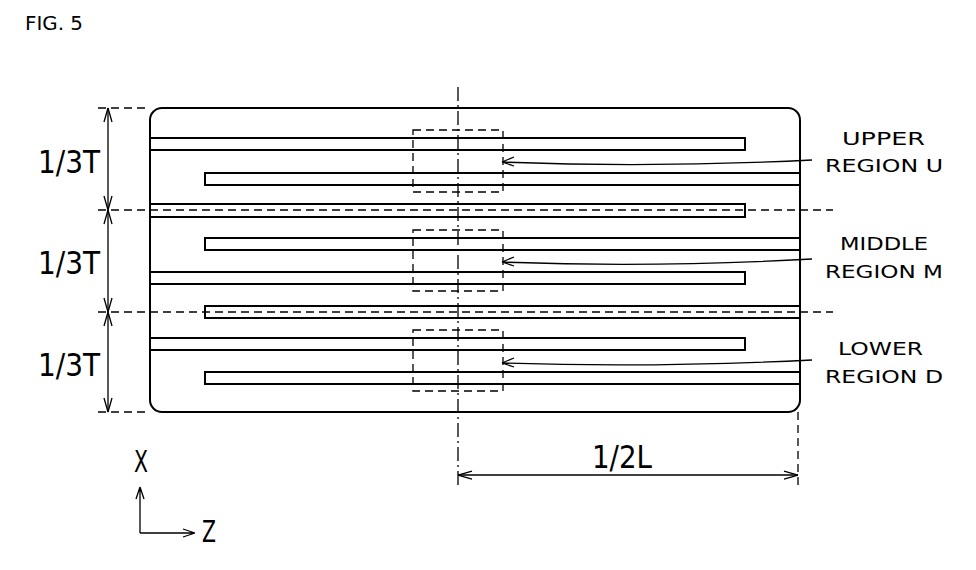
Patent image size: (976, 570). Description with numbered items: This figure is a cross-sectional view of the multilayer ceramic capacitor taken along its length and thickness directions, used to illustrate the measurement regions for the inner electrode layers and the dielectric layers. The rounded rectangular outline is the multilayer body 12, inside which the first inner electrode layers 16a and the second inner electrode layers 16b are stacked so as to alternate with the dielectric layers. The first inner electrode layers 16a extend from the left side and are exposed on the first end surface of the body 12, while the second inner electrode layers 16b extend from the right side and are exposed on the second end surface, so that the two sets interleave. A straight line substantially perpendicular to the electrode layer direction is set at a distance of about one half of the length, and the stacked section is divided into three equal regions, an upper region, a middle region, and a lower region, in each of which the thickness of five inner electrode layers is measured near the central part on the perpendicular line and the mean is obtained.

The multilayer body 12 is at (616, 96).
The first inner electrode layers 16a is at (187, 205).
The second inner electrode layers 16b is at (273, 240).